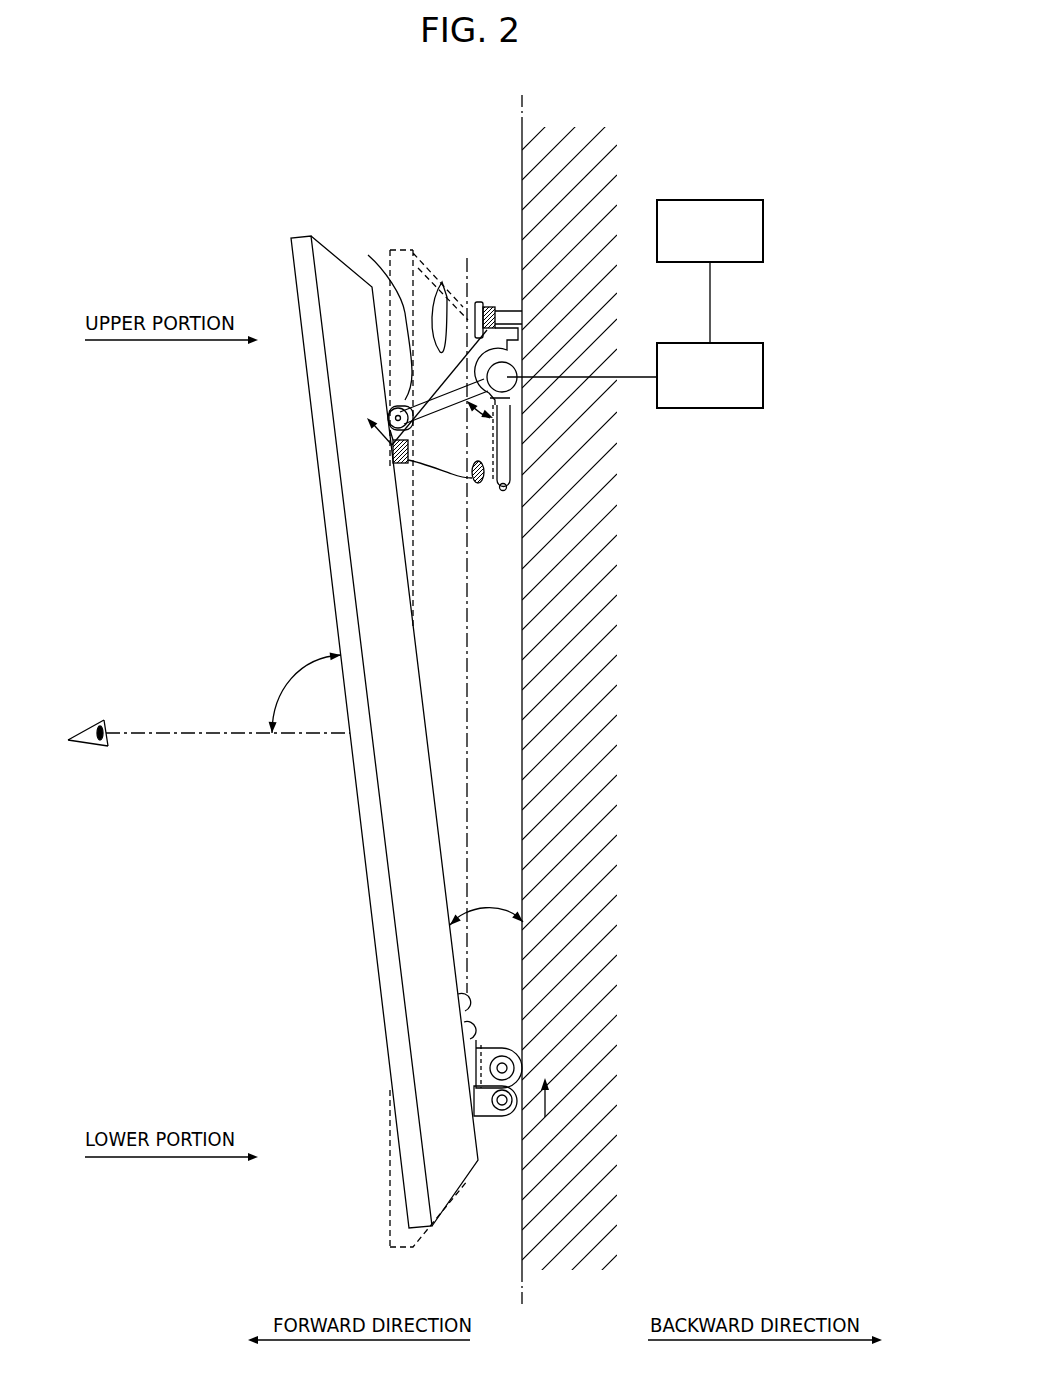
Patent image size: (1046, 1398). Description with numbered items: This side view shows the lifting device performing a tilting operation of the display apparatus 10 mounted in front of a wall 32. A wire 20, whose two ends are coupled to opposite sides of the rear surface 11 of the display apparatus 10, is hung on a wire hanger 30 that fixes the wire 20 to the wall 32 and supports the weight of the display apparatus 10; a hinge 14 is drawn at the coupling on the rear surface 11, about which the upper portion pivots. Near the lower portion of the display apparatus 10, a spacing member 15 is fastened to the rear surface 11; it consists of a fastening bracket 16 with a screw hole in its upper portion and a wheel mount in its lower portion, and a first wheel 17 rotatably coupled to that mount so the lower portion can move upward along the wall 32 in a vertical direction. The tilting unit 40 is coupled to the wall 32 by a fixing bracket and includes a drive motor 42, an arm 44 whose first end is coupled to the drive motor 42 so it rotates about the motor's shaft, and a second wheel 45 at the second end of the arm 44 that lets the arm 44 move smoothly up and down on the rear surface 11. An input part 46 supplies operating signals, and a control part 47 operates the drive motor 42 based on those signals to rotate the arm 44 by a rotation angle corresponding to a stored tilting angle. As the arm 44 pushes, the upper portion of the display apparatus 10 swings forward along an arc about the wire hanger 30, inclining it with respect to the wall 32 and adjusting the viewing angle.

The display apparatus 10 is at (364, 691).
The rear surface 11 is at (431, 773).
The hinge 14 is at (410, 452).
The spacing member 15 is at (513, 1027).
The fastening bracket 16 is at (472, 1028).
The first wheel 17 is at (521, 1062).
The wire 20 is at (442, 282).
The wire hanger 30 is at (478, 302).
The wall 32 is at (522, 640).
The tilting unit 40 is at (567, 386).
The drive motor 42 is at (510, 383).
The arm 44 is at (380, 336).
The second wheel 45 is at (390, 410).
The input part 46 is at (765, 230).
The control part 47 is at (765, 378).